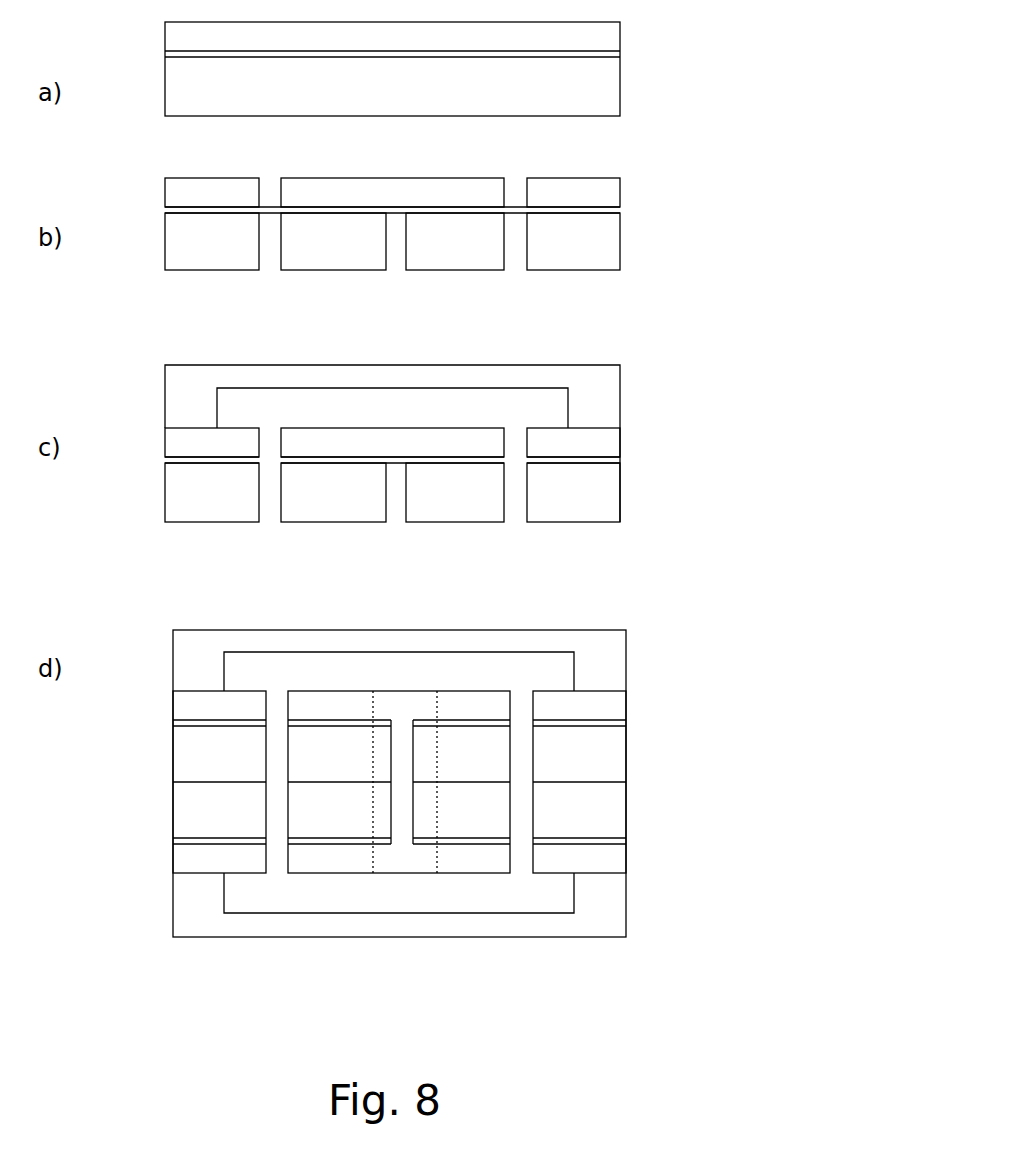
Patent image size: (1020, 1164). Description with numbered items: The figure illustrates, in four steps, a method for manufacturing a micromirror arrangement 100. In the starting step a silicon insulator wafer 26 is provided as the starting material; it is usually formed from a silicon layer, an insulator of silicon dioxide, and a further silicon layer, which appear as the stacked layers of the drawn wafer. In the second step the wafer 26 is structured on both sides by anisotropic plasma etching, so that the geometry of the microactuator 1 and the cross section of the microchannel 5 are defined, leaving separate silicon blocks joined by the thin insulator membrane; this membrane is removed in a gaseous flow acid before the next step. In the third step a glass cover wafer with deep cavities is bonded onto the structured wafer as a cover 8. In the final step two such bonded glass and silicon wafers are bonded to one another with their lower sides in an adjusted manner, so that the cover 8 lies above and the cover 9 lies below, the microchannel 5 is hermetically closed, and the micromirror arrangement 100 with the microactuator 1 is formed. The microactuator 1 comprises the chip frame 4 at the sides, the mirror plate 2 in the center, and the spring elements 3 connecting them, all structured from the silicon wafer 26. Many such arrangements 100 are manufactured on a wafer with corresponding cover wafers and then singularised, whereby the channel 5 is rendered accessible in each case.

The silicon insulator wafer 26 is at (626, 82).
The glass cover 8 is at (595, 388).
The glass cover 9 is at (620, 923).
The microactuator 1 is at (655, 796).
The micromirror arrangement 100 is at (740, 719).
The chip frame 4 is at (195, 800).
The mirror plate 2 is at (333, 763).
The microchannel 5 is at (402, 823).
The spring elements 3 is at (435, 805).